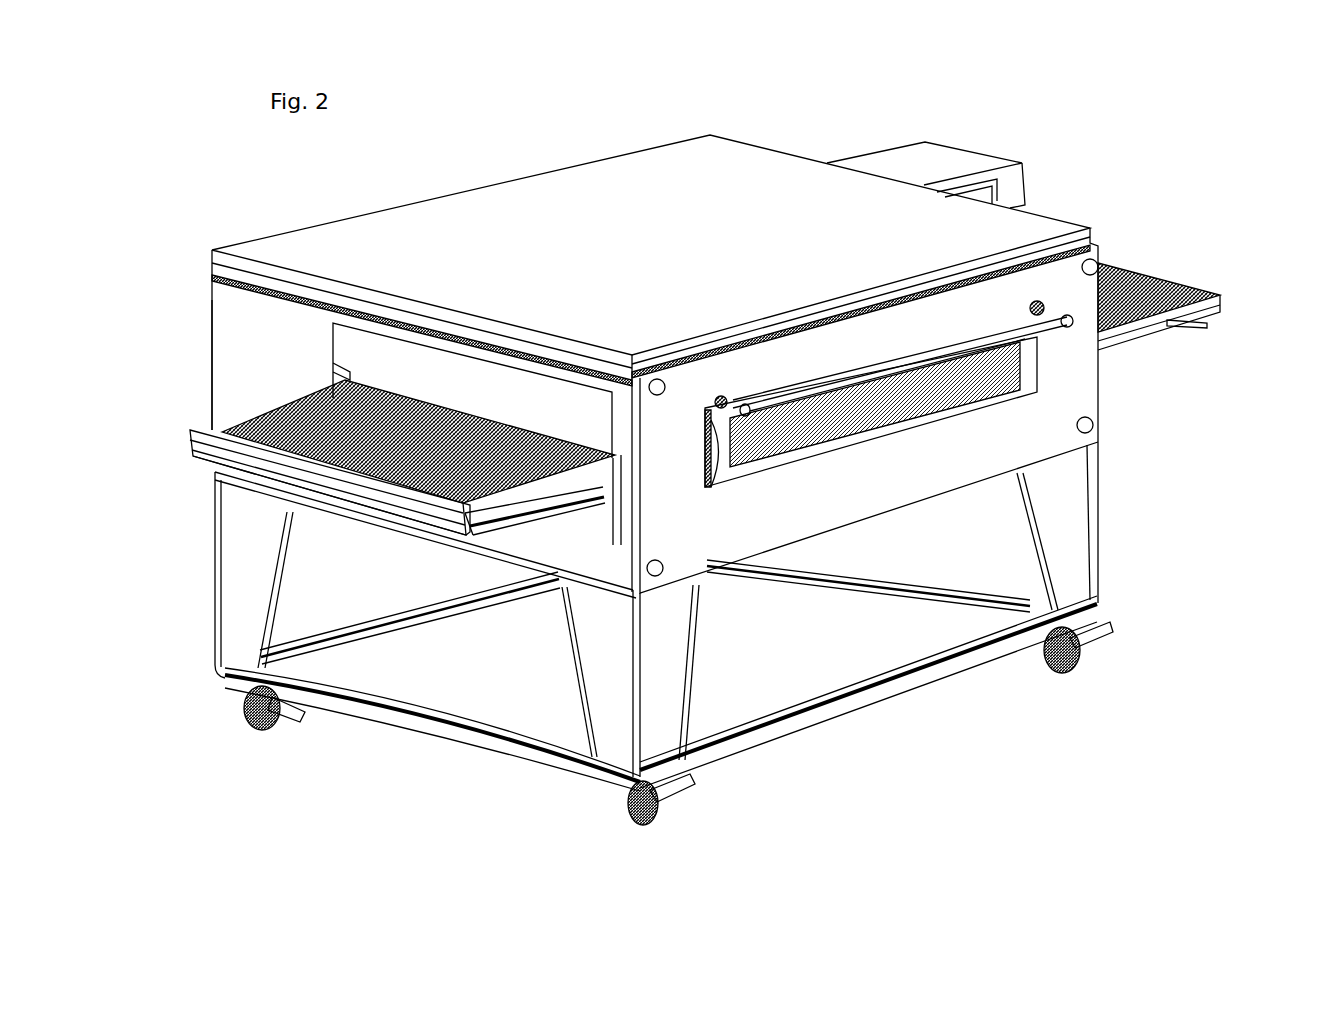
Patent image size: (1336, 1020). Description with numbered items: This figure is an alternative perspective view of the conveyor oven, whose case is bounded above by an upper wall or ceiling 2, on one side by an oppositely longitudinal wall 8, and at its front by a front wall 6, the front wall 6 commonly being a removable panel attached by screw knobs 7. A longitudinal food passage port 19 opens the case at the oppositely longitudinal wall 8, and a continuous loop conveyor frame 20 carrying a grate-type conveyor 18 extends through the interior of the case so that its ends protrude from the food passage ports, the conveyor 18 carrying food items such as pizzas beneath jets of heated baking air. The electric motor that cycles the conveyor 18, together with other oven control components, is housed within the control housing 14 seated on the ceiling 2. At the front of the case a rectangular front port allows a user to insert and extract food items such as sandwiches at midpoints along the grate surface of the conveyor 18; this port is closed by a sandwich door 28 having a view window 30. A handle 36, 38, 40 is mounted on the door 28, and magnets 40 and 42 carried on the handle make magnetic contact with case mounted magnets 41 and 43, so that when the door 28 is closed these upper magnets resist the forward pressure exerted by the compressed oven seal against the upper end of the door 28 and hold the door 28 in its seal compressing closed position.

The upper wall or ceiling 2 is at (598, 190).
The control housing 14 is at (910, 160).
The oppositely longitudinal wall 8 is at (275, 335).
The longitudinal food passage port 19 is at (390, 393).
The grate-type conveyor 18 is at (275, 437).
The continuous loop conveyor frame 20 is at (505, 520).
The screw knobs 7 is at (1105, 262).
The sandwich door 28 is at (915, 427).
The view window 30 is at (812, 428).
The handle 36 is at (1055, 335).
The handle 38 is at (712, 470).
The magnet 40 is at (1062, 314).
The case mounted magnet 41 is at (716, 401).
The magnet 42 is at (744, 402).
The case mounted magnet 43 is at (1030, 308).
The front wall 6 is at (765, 513).